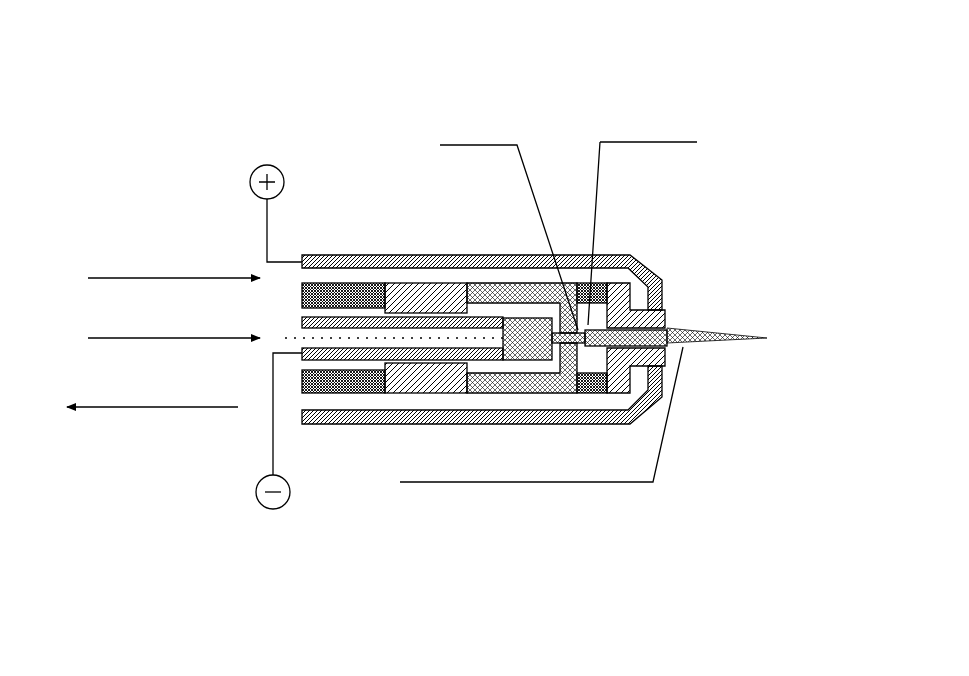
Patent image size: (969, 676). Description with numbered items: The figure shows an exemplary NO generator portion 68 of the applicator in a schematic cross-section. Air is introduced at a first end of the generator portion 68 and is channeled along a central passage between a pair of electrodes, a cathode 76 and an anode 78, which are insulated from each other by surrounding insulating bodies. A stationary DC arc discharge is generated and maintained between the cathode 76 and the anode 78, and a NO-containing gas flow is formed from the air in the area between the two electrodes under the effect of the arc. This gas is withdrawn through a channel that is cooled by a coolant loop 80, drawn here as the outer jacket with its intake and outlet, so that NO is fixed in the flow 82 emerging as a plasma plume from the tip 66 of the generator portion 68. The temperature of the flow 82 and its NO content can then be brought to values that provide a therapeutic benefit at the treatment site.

The NO generator portion 68 is at (150, 90).
The coolant loop 80 is at (386, 270).
The cathode 76 is at (480, 290).
The anode 78 is at (663, 280).
The tip 66 is at (667, 312).
The flow 82 is at (767, 325).